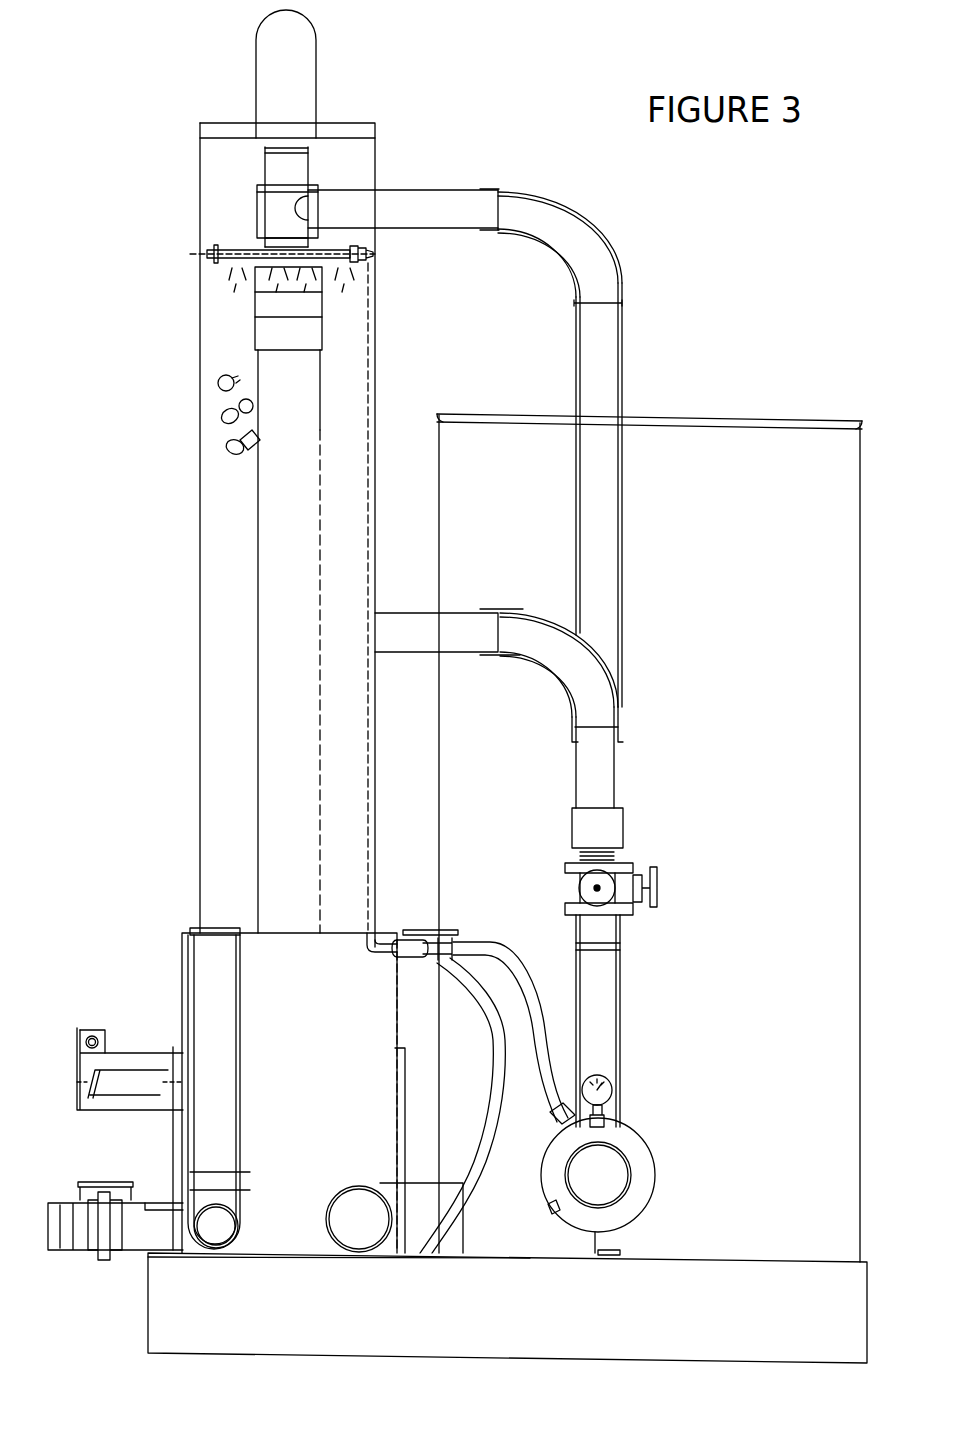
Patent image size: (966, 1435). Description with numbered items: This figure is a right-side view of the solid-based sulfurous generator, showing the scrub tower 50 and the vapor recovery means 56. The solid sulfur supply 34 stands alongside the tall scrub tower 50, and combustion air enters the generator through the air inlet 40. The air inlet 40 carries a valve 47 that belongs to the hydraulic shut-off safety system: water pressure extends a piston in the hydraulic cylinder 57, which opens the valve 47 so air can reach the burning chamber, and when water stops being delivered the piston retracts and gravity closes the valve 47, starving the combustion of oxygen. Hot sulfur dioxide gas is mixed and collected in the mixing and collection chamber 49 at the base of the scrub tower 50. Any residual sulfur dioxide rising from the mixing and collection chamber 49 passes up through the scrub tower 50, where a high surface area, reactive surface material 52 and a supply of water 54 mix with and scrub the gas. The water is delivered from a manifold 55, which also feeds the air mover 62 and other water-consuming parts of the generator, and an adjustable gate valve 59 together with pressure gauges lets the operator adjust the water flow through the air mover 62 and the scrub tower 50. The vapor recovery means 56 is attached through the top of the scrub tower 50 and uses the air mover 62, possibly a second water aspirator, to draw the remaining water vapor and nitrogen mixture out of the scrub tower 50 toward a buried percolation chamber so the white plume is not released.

The solid sulfur supply 34 is at (649, 838).
The air inlet 40 is at (111, 1040).
The valve 47 is at (109, 1139).
The mixing and collection chamber 49 is at (322, 1090).
The scrub tower 50 is at (287, 535).
The reactive surface material 52 is at (237, 434).
The supply of water 54 is at (282, 252).
The manifold 55 is at (598, 1186).
The vapor recovery means 56 is at (286, 74).
The hydraulic cylinder 57 is at (128, 1086).
The adjustable gate valve 59 is at (630, 889).
The air mover 62 is at (299, 197).